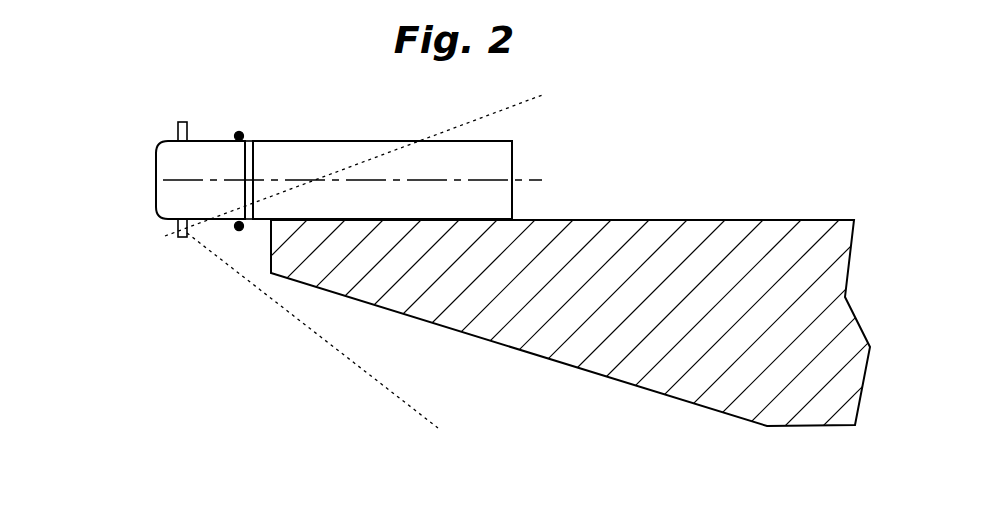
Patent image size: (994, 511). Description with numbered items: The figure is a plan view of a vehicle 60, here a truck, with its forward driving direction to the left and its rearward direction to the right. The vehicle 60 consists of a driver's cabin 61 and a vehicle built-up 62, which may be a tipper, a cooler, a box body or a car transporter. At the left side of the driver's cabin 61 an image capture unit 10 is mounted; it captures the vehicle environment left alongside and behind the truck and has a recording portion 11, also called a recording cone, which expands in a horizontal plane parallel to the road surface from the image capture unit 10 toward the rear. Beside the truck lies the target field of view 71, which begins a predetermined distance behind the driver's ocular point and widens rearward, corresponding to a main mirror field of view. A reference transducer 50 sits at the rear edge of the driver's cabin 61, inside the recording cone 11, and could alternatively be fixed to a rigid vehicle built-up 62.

The vehicle 60 is at (143, 122).
The driver's cabin 61 is at (170, 203).
The vehicle built-up 62 is at (303, 150).
The image capture unit 10 is at (183, 238).
The recording portion 11 is at (357, 335).
The reference transducer 50 is at (240, 227).
The target field of view 71 is at (610, 318).